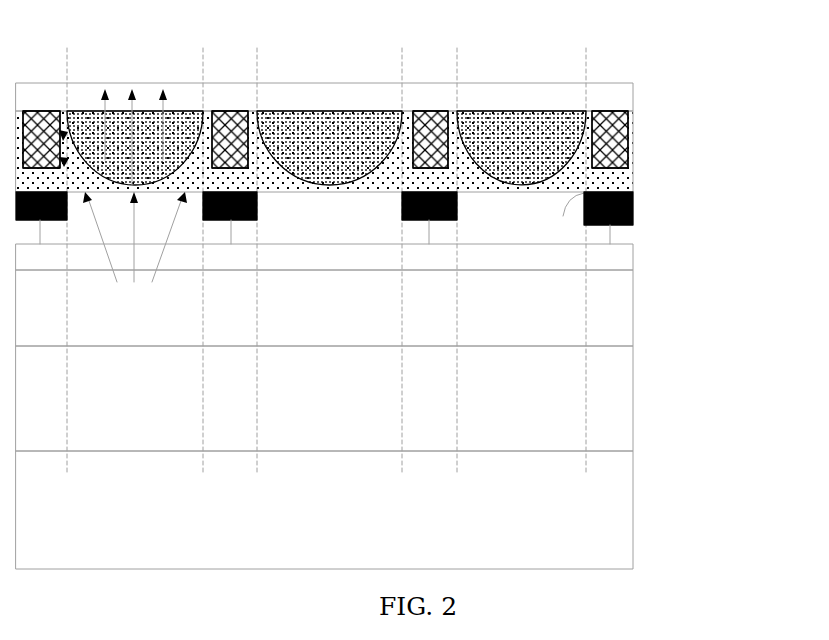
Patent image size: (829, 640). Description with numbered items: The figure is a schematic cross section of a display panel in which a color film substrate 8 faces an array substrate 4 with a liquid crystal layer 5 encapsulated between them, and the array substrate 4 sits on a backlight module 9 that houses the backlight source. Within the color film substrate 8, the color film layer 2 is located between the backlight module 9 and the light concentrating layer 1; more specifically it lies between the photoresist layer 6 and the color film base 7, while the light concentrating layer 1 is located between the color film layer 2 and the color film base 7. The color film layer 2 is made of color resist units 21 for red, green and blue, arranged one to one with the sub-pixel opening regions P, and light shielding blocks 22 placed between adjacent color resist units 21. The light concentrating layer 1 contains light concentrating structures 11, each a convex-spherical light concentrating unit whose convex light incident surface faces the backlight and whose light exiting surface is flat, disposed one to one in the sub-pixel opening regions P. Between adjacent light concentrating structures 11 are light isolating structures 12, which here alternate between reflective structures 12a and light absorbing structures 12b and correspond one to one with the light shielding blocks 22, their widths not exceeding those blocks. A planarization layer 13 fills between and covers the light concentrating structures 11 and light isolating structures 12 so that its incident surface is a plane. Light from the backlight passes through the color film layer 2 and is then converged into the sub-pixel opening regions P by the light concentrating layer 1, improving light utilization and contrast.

The light concentrating layer 1 is at (708, 117).
The color film layer 2 is at (697, 193).
The array substrate 4 is at (605, 412).
The liquid crystal layer 5 is at (597, 318).
The photoresist layer 6 is at (607, 259).
The color film base 7 is at (608, 104).
The color film substrate 8 is at (747, 72).
The backlight module 9 is at (583, 525).
The light concentrating structures 11 is at (557, 148).
The light isolating structures 12 is at (360, 103).
The reflective structures 12a is at (33, 112).
The light absorbing structures 12b is at (222, 112).
The planarization layer 13 is at (607, 183).
The color resist units 21 is at (631, 193).
The light shielding blocks 22 is at (633, 222).
The sub-pixel opening regions P is at (67, 53).